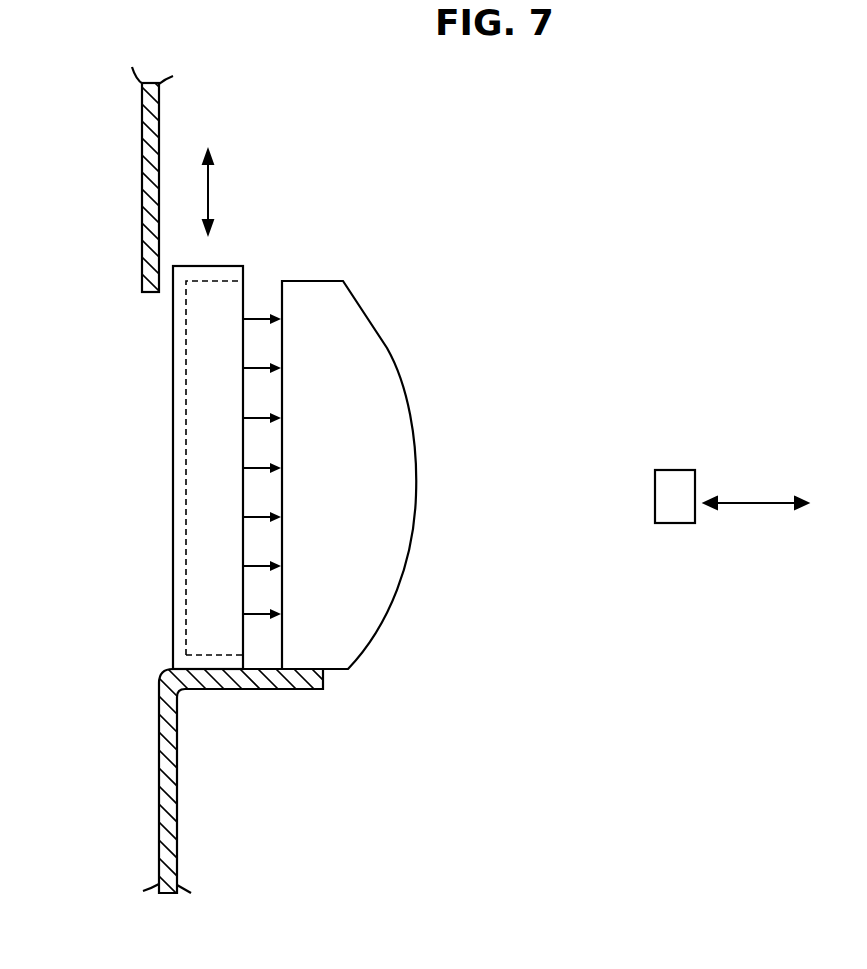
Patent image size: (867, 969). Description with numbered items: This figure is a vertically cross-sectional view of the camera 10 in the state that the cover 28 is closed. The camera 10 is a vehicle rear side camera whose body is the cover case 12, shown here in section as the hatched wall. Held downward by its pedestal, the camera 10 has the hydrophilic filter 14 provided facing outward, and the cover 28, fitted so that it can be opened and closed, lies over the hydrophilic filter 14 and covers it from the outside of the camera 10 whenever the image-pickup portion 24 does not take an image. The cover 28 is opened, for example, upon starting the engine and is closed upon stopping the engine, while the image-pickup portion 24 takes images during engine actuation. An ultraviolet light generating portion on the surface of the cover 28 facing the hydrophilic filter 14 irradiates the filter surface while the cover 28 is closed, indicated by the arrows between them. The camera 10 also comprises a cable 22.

The camera 10 is at (828, 161).
The cover case 12 is at (141, 158).
The hydrophilic filter 14 is at (355, 318).
The cable 22 is at (778, 503).
The image-pickup portion 24 is at (680, 478).
The cover 28 is at (164, 635).